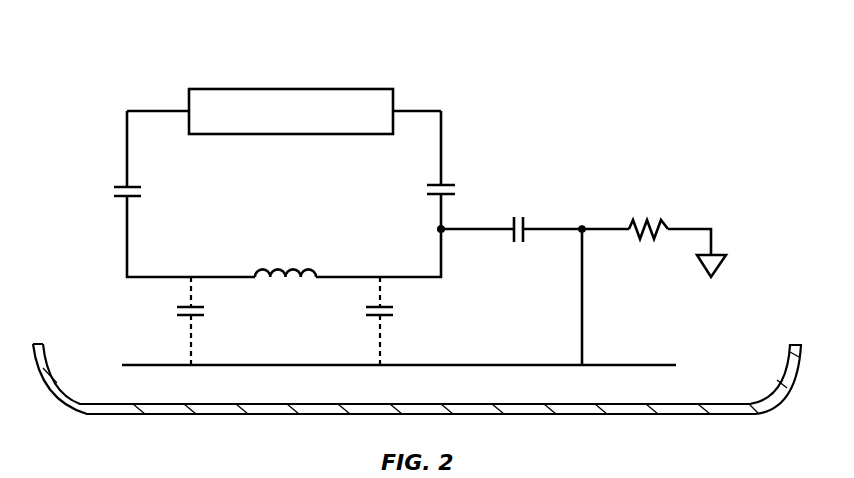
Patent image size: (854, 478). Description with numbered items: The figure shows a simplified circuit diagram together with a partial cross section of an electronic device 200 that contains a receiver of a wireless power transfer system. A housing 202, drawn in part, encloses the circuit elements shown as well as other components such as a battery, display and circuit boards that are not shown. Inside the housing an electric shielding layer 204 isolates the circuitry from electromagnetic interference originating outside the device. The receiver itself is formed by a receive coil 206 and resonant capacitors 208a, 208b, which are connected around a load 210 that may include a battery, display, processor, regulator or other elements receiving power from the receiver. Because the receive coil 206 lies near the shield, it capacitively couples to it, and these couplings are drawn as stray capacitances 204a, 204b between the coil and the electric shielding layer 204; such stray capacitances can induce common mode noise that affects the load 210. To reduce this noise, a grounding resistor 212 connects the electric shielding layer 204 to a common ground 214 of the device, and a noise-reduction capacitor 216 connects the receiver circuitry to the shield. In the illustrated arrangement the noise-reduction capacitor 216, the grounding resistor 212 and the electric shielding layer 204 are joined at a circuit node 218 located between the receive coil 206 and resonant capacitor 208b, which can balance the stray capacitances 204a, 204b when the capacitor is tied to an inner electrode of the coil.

The electronic device 200 is at (633, 52).
The housing 202 is at (720, 402).
The electric shielding layer 204 is at (500, 363).
The stray capacitance 204a is at (188, 317).
The stray capacitance 204b is at (378, 317).
The receive coil 206 is at (281, 265).
The resonant capacitor 208a is at (133, 187).
The resonant capacitor 208b is at (447, 185).
The load 210 is at (281, 88).
The grounding resistor 212 is at (658, 221).
The common ground 214 is at (713, 272).
The noise-reduction capacitor 216 is at (527, 228).
The circuit node 218 is at (445, 233).